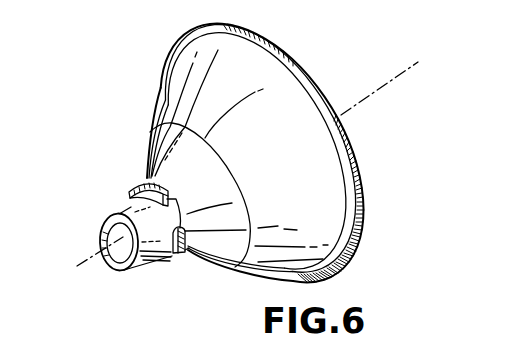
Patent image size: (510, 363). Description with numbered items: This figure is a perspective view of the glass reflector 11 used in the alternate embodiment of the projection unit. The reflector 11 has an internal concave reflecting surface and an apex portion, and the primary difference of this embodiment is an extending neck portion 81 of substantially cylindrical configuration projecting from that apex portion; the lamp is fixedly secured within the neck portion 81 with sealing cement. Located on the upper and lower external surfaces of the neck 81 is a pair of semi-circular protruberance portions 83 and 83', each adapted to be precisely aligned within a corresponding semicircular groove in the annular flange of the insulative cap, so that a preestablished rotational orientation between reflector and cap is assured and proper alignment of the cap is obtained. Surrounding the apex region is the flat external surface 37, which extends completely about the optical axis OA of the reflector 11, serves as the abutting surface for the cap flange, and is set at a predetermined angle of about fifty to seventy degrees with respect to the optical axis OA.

The glass reflector 11 is at (166, 82).
The external surface 37 is at (150, 160).
The neck portion 81 is at (121, 216).
The semi-circular protruberance portion 83 is at (128, 188).
The semi-circular protruberance portion 83' is at (170, 262).
The optical axis OA is at (235, 164).